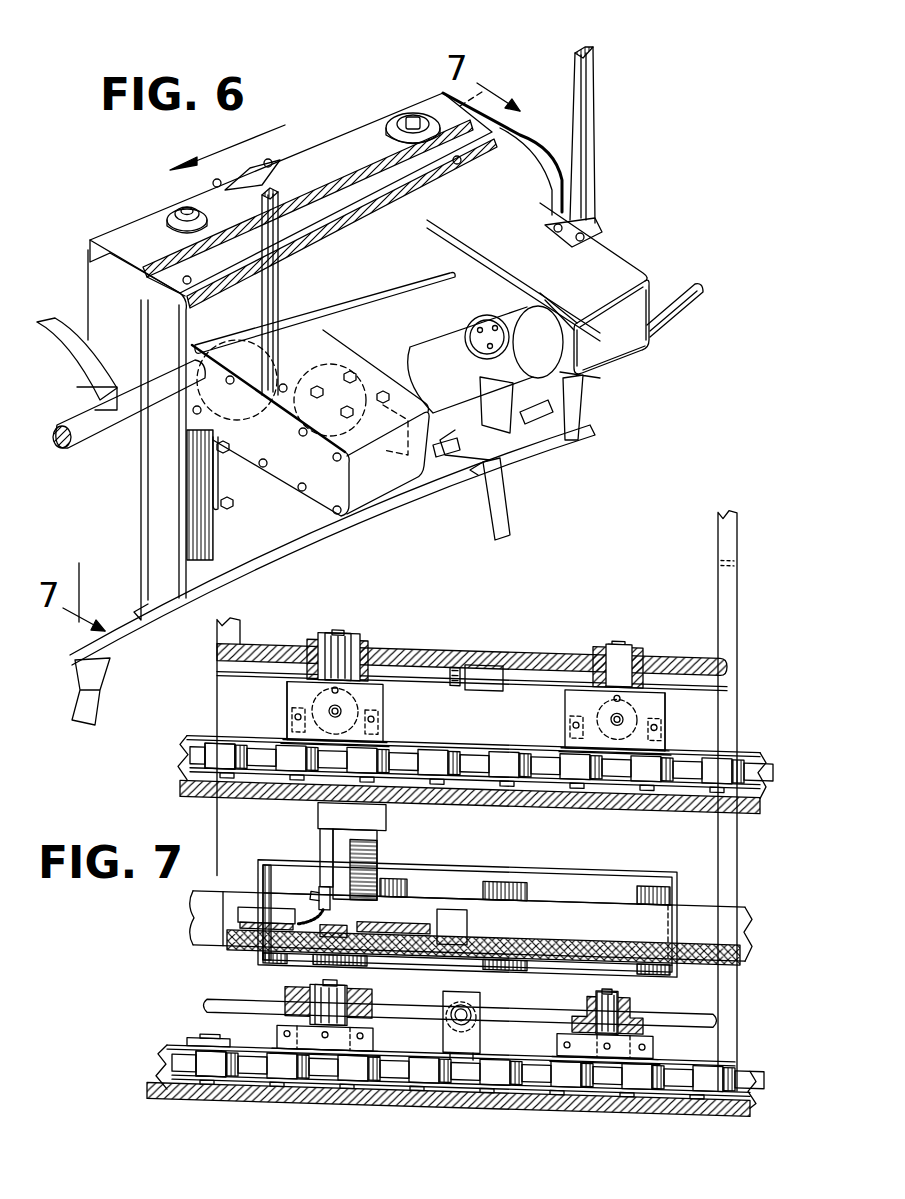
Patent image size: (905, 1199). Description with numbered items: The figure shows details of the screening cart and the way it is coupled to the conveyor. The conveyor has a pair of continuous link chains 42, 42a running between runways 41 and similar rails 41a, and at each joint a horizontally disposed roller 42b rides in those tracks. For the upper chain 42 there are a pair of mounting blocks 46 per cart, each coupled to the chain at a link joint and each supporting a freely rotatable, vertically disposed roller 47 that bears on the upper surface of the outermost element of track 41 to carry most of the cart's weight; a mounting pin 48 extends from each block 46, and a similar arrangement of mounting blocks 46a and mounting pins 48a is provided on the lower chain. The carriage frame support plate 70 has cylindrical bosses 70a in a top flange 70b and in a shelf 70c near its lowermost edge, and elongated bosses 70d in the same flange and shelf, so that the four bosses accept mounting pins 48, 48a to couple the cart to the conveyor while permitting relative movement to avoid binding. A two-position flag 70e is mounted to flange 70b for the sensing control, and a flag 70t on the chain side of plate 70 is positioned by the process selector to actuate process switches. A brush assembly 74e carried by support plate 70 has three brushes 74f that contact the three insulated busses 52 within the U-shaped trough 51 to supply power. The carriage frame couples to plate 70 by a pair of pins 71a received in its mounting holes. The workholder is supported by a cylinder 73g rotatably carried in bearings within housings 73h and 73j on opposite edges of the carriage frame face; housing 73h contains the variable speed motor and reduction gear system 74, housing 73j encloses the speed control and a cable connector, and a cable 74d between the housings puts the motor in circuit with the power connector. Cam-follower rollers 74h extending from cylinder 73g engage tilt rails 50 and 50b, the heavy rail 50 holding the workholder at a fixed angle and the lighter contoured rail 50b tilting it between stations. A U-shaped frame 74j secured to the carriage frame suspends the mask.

In FIG. 6, the carriage frame support plate 70 is at (110, 240).
In FIG. 6, the cylindrical bosses 70a is at (175, 212).
In FIG. 7, the cylindrical bosses 70a is at (600, 647).
In FIG. 7, the top flange 70b is at (560, 632).
In FIG. 7, the shelf 70c is at (528, 1013).
In FIG. 6, the elongated bosses 70d is at (397, 127).
In FIG. 7, the elongated bosses 70d is at (318, 645).
In FIG. 7, the flag 70e is at (485, 690).
In FIG. 7, the flag 70t is at (463, 1047).
In FIG. 6, the pins 71a is at (150, 312).
In FIG. 6, the cylinder 73g is at (575, 410).
In FIG. 6, the housing 73h is at (385, 480).
In FIG. 6, the housing 73j is at (632, 350).
In FIG. 6, the variable speed driving motor and reduction gear system 74 is at (200, 430).
In FIG. 6, the cable 74d is at (340, 317).
In FIG. 7, the brush assembly 74e is at (390, 822).
In FIG. 7, the brushes 74f is at (322, 887).
In FIG. 6, the rollers 74h is at (533, 420).
In FIG. 6, the U-shaped frame 74j is at (588, 140).
In FIG. 6, the tilt rail 50 is at (72, 423).
In FIG. 6, the tilt rail 50b is at (77, 667).
In FIG. 7, the U-shaped trough 51 is at (532, 935).
In FIG. 7, the busses 52 is at (353, 913).
In FIG. 7, the runways 41 is at (185, 750).
In FIG. 7, the rails 41a is at (163, 1070).
In FIG. 7, the link chain 42 is at (200, 780).
In FIG. 7, the link chain 42a is at (197, 1042).
In FIG. 7, the roller 42b is at (228, 748).
In FIG. 7, the mounting blocks 46 is at (385, 707).
In FIG. 7, the mounting blocks 46a is at (313, 1040).
In FIG. 7, the roller 47 is at (290, 703).
In FIG. 7, the mounting pin 48 is at (340, 630).
In FIG. 7, the mounting pins 48a is at (332, 1008).